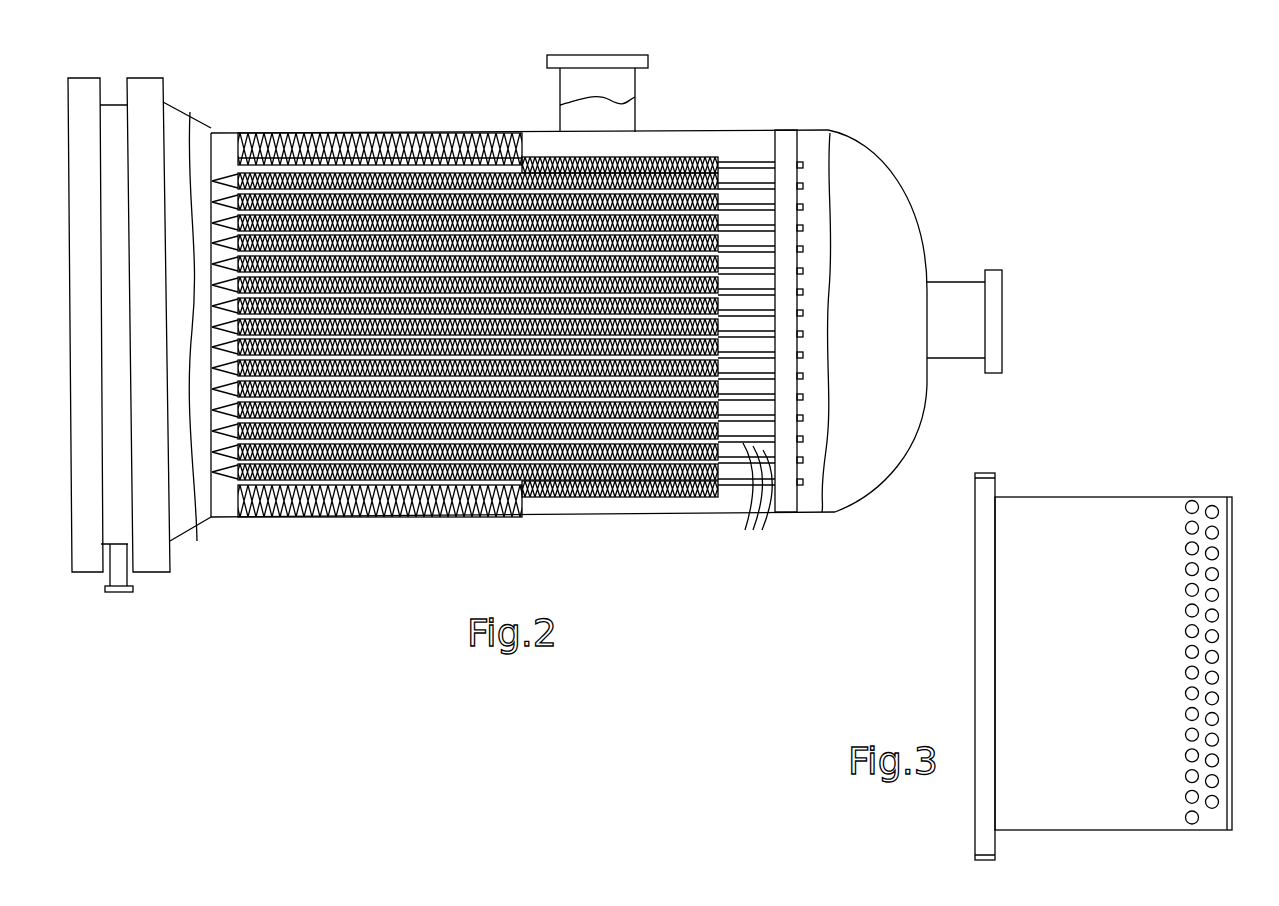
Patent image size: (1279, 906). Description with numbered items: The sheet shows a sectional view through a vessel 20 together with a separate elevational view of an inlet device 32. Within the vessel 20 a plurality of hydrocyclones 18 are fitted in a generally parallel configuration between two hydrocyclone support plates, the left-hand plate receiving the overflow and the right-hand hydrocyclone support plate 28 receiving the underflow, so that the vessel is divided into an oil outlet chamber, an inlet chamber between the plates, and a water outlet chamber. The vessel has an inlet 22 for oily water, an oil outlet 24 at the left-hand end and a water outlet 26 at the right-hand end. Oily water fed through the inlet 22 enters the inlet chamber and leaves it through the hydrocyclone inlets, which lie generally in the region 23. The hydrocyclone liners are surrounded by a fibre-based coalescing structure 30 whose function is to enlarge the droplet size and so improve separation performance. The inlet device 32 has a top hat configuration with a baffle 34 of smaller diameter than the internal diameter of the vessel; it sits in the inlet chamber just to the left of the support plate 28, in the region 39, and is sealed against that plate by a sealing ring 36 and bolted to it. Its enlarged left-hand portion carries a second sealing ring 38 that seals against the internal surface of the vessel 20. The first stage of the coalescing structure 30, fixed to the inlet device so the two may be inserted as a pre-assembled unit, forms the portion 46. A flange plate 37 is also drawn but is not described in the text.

In FIG. 2, the hydrocyclones 18 is at (756, 500).
In FIG. 2, the vessel 20 is at (903, 162).
In FIG. 2, the inlet 22 is at (636, 96).
In FIG. 2, the region 23 is at (193, 112).
In FIG. 2, the oil outlet 24 is at (133, 590).
In FIG. 2, the water outlet 26 is at (115, 120).
In FIG. 2, the hydrocyclone support plate 28 is at (784, 143).
In FIG. 2, the coalescing structure 30 is at (405, 500).
In FIG. 3, the inlet device 32 is at (1097, 808).
In FIG. 3, the baffle 34 is at (1048, 642).
In FIG. 3, the sealing ring 36 is at (1232, 561).
In FIG. 3, the flange plate 37 is at (983, 560).
In FIG. 3, the second sealing ring 38 is at (995, 477).
In FIG. 2, the region 39 is at (658, 247).
In FIG. 2, the portion 46 is at (530, 518).